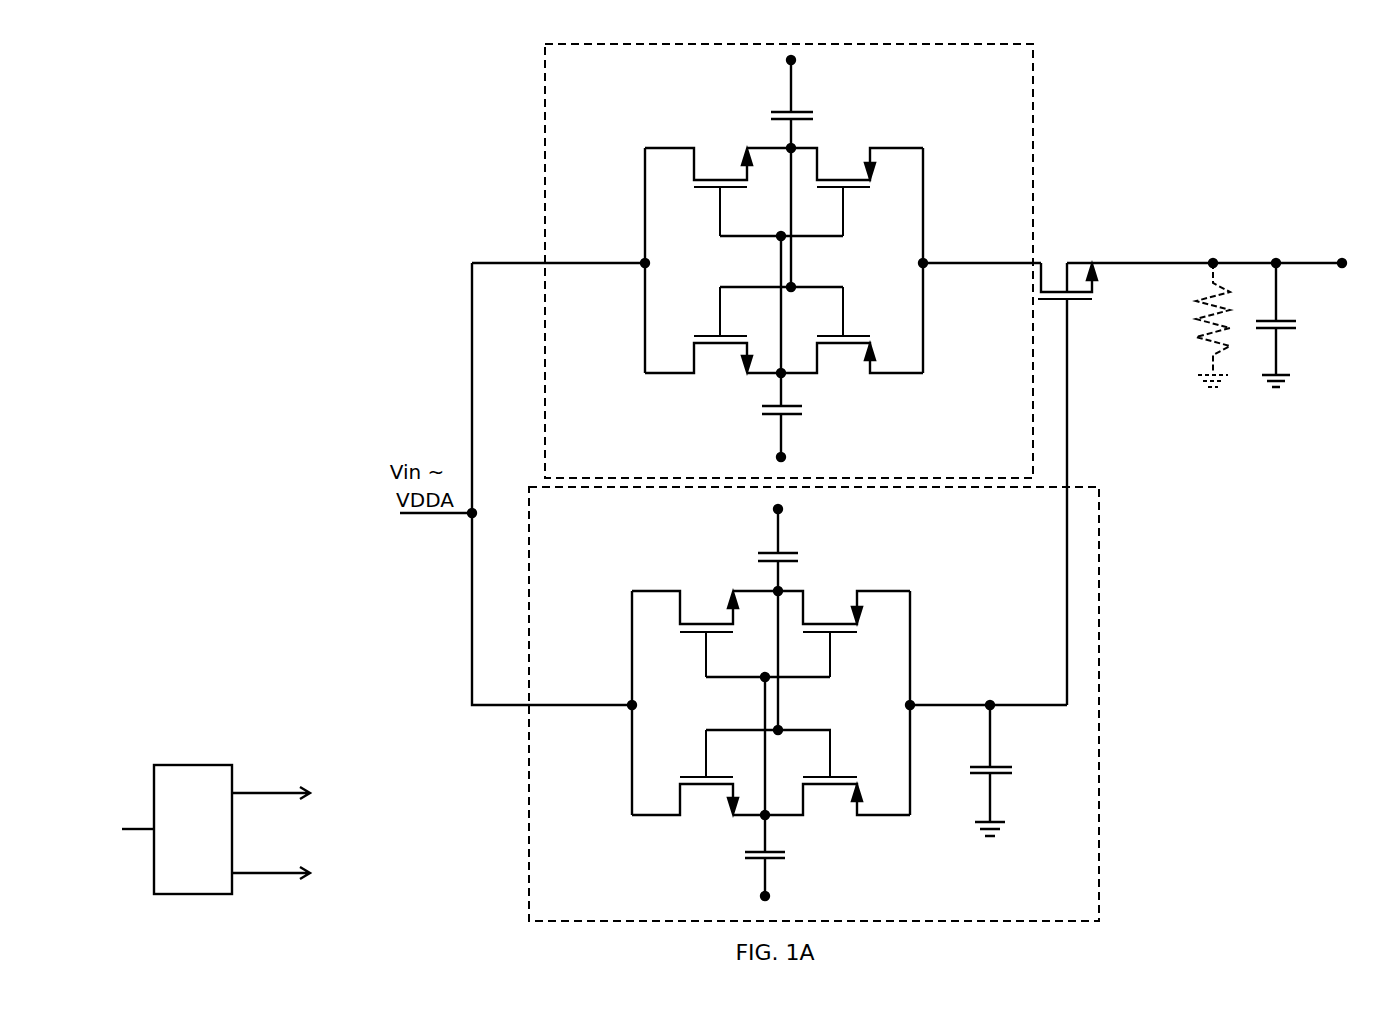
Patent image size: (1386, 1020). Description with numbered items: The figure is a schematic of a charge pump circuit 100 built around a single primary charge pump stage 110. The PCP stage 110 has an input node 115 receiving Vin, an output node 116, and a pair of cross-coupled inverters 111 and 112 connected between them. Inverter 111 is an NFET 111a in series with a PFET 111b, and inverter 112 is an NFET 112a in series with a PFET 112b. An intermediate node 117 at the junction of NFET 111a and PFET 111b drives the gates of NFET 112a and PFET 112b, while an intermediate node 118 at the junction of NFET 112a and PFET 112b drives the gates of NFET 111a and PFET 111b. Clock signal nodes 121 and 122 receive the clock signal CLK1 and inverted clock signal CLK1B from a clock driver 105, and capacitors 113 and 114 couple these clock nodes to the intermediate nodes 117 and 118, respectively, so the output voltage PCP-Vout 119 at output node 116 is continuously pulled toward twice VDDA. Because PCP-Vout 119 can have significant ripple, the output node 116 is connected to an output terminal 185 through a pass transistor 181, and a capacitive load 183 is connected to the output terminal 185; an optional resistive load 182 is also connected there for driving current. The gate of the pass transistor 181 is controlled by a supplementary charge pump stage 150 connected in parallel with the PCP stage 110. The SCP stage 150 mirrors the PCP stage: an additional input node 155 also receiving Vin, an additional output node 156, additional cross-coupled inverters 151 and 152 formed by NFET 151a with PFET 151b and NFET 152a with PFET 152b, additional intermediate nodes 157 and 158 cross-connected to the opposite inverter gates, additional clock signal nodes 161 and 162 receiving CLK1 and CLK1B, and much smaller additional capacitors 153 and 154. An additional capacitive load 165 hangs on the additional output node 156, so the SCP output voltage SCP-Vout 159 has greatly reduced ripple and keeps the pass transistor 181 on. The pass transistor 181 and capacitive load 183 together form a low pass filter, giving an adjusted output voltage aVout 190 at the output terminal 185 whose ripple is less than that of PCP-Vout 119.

The charge pump circuit 100 is at (1156, 90).
The clock driver 105 is at (208, 845).
The primary charge pump stage 110 is at (600, 452).
The inverter 111 is at (825, 176).
The N-channel field effect transistor 111a is at (706, 196).
The P-channel field effect transistor 111b is at (862, 196).
The inverter 112 is at (823, 327).
The N-channel field effect transistor 112a is at (700, 322).
The P-channel field effect transistor 112b is at (858, 325).
The capacitor 113 is at (776, 104).
The capacitor 114 is at (766, 420).
The input node 115 is at (640, 262).
The output node 116 is at (925, 266).
The intermediate node 117 is at (786, 146).
The intermediate node 118 is at (784, 376).
The PCP output voltage 119 is at (966, 213).
The clock signal node 121 is at (793, 61).
The clock signal node 122 is at (784, 457).
The supplementary charge pump stage 150 is at (1028, 892).
The additional inverter 151 is at (811, 625).
The additional N-channel field effect transistor 151a is at (690, 642).
The additional P-channel field effect transistor 151b is at (850, 636).
The additional inverter 152 is at (735, 783).
The additional N-channel field effect transistor 152a is at (688, 763).
The additional P-channel field effect transistor 152b is at (844, 774).
The additional capacitor 153 is at (764, 545).
The additional capacitor 154 is at (752, 865).
The additional input node 155 is at (628, 705).
The additional output node 156 is at (912, 708).
The additional intermediate node 157 is at (776, 590).
The additional intermediate node 158 is at (768, 818).
The SCP output voltage 159 is at (975, 670).
The additional clock signal node 161 is at (781, 507).
The additional clock signal node 162 is at (768, 897).
The additional capacitive load 165 is at (1002, 766).
The pass transistor 181 is at (1078, 307).
The resistive load 182 is at (1198, 302).
The capacitive load 183 is at (1290, 318).
The output terminal 185 is at (1342, 267).
The adjusted output voltage 190 is at (1140, 222).